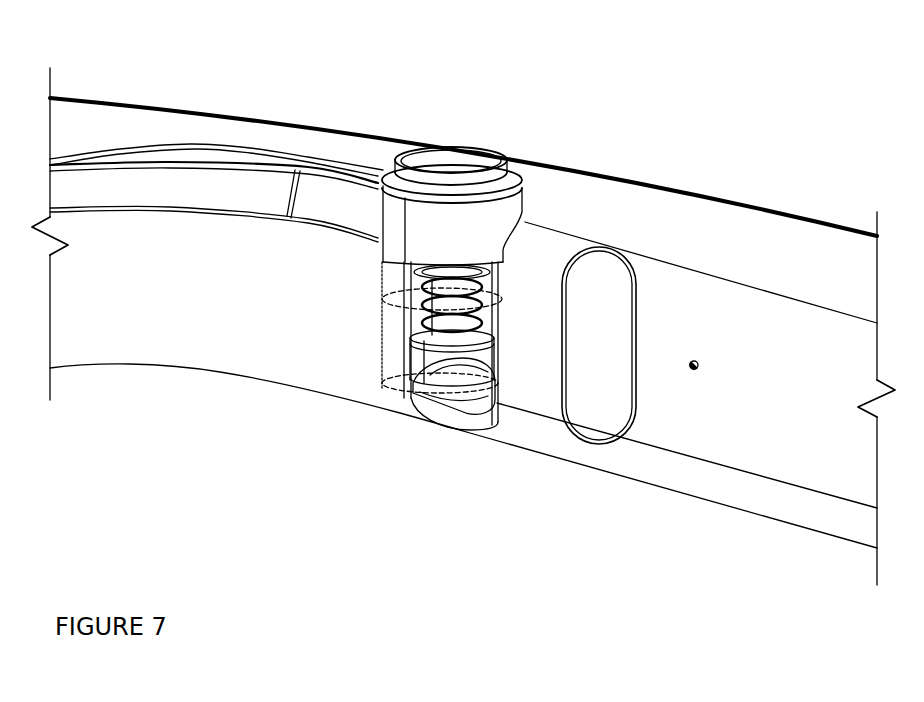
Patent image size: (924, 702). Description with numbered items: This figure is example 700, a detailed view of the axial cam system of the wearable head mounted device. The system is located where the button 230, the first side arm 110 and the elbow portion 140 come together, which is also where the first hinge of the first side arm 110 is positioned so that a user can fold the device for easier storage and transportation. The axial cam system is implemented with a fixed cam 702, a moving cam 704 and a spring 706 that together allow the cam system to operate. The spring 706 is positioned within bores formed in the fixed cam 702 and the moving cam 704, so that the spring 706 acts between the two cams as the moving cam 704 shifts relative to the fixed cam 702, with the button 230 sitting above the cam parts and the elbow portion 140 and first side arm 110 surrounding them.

The example 700 is at (134, 608).
The first side arm 110 is at (818, 220).
The elbow portion 140 is at (138, 102).
The button 230 is at (453, 155).
The fixed cam 702 is at (477, 380).
The moving cam 704 is at (413, 358).
The spring 706 is at (500, 293).